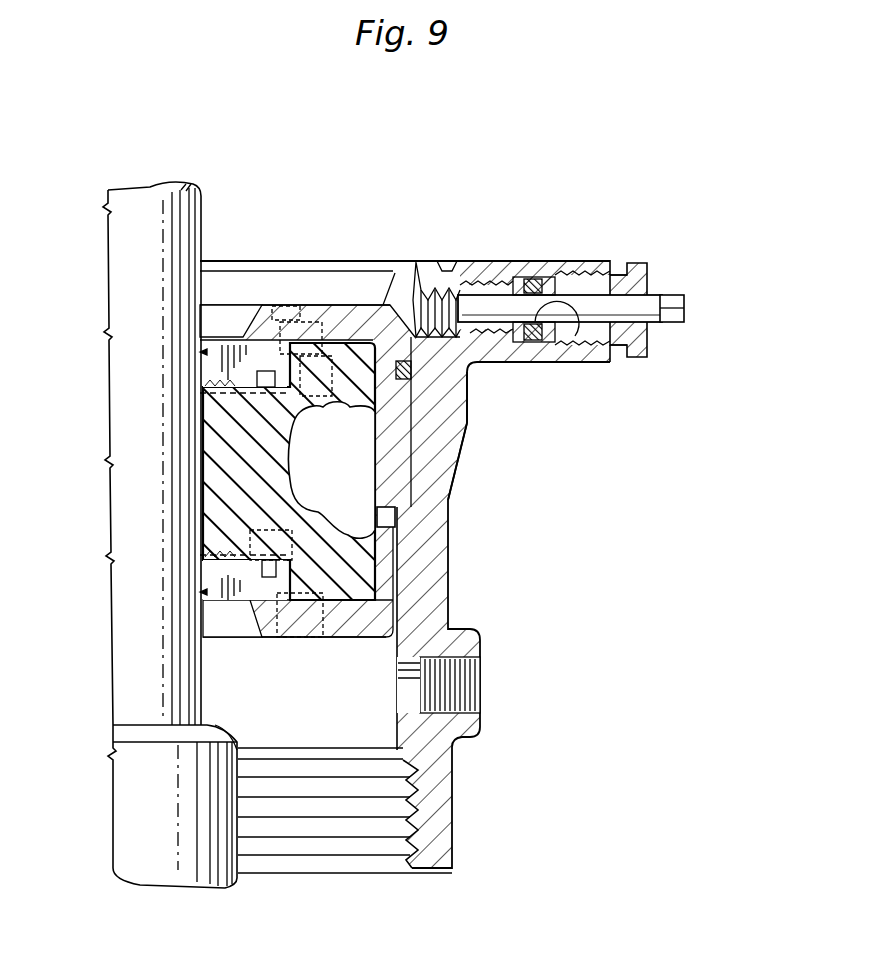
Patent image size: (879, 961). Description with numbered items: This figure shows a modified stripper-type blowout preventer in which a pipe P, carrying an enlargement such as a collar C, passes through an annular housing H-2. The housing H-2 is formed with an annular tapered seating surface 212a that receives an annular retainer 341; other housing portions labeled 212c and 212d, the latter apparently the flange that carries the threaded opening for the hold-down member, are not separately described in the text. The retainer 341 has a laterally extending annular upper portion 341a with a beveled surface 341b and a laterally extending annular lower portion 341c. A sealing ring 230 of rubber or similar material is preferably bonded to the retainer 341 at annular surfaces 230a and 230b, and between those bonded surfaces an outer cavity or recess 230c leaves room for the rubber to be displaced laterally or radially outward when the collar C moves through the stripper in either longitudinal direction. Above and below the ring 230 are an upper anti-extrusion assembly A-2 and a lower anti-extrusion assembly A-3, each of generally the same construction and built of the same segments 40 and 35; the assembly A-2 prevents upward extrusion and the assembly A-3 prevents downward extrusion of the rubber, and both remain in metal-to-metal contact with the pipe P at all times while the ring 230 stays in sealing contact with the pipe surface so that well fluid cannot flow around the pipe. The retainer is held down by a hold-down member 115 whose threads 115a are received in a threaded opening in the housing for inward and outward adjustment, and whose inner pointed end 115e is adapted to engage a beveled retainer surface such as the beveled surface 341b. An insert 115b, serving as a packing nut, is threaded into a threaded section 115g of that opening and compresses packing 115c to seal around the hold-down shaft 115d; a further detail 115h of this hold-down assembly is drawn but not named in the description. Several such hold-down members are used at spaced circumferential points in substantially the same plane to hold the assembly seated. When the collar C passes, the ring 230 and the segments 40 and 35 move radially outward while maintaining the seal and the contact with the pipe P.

The pipe P is at (122, 665).
The collar C is at (125, 797).
The annular housing H-2 is at (433, 607).
The annular retainer 341 is at (390, 420).
The annular upper portion 341a is at (350, 305).
The beveled surface 341b is at (395, 272).
The annular lower portion 341c is at (352, 605).
The sealing ring 230 is at (198, 468).
The annular surface 230a is at (457, 383).
The annular surface 230b is at (395, 555).
The outer cavity or recess 230c is at (300, 496).
The annular tapered seating surface 212a is at (428, 457).
The threaded bore 212c is at (410, 850).
The boss 212d is at (605, 363).
The hold-down member 115 is at (672, 300).
The threads 115a is at (422, 282).
The insert 115b is at (640, 265).
The packing 115c is at (535, 283).
The hold-down shaft 115d is at (478, 306).
The inner pointed end 115e is at (400, 297).
The threaded section 115g is at (580, 262).
The ball 115h is at (577, 340).
The segments 40 is at (226, 336).
The segments 35 is at (200, 393).
The upper anti-extrusion assembly A-2 is at (205, 352).
The lower anti-extrusion assembly A-3 is at (205, 592).